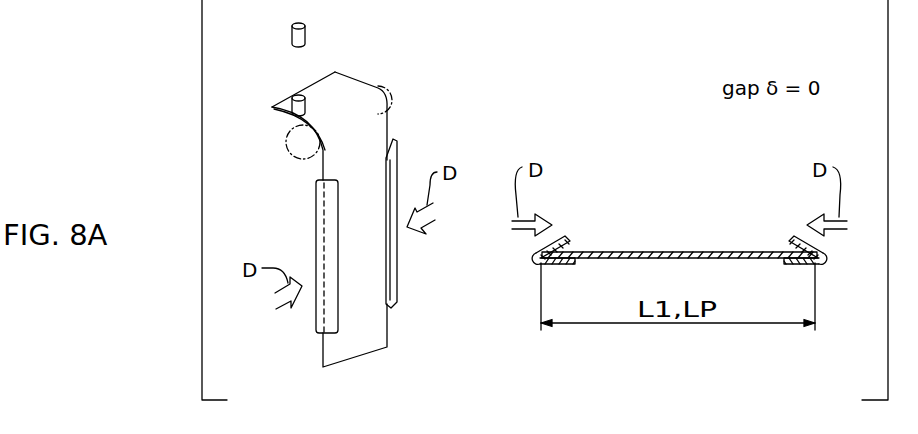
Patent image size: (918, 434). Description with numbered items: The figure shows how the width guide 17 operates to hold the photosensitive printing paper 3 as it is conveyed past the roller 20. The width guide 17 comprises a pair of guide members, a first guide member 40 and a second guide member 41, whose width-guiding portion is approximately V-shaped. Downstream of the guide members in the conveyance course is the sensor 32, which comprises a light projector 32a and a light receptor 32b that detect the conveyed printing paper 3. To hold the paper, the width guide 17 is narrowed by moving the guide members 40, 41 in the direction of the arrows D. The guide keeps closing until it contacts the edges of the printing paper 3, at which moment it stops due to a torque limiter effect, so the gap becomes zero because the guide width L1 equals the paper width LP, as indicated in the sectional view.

The printing paper 3 is at (375, 348).
The width guide 17 is at (316, 222).
The roller 20 is at (395, 105).
The sensor 32 is at (369, 69).
The light projector 32a is at (306, 33).
The light receptor 32b is at (306, 97).
The first guide member 40 is at (393, 290).
The second guide member 41 is at (317, 334).